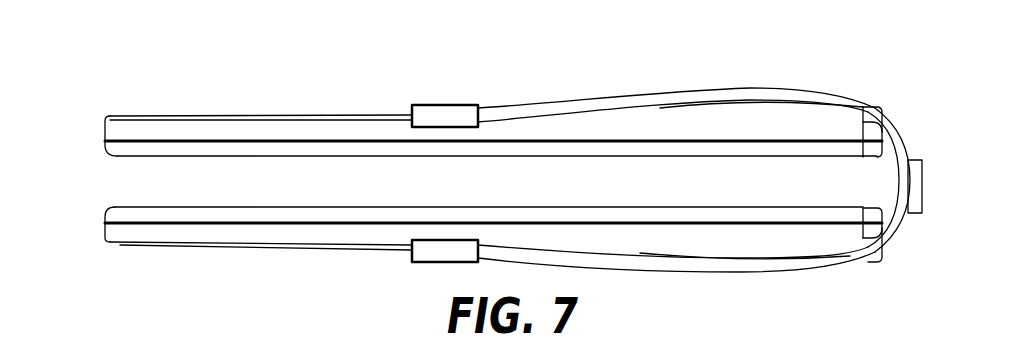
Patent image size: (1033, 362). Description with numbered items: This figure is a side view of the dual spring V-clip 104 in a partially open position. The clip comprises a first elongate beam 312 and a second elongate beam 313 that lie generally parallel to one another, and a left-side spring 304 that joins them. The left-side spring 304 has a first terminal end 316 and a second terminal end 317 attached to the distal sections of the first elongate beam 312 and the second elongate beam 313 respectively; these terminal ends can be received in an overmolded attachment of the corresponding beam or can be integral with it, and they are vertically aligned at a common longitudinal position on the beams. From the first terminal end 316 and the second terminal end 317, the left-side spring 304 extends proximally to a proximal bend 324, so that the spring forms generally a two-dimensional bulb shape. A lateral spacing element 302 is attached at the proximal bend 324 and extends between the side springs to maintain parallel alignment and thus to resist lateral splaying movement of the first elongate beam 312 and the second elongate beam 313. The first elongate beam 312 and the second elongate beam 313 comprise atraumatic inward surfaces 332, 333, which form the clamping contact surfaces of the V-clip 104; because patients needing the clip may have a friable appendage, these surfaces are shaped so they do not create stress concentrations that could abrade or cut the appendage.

The dual spring V-clip 104 is at (355, 104).
The lateral spacing element 302 is at (920, 160).
The left-side spring 304 is at (800, 273).
The first elongate beam 312 is at (178, 130).
The second elongate beam 313 is at (178, 232).
The first terminal end 316 is at (458, 118).
The second terminal end 317 is at (428, 248).
The proximal bend 324 is at (904, 155).
The atraumatic inward surface 332 is at (106, 150).
The atraumatic inward surface 333 is at (105, 217).